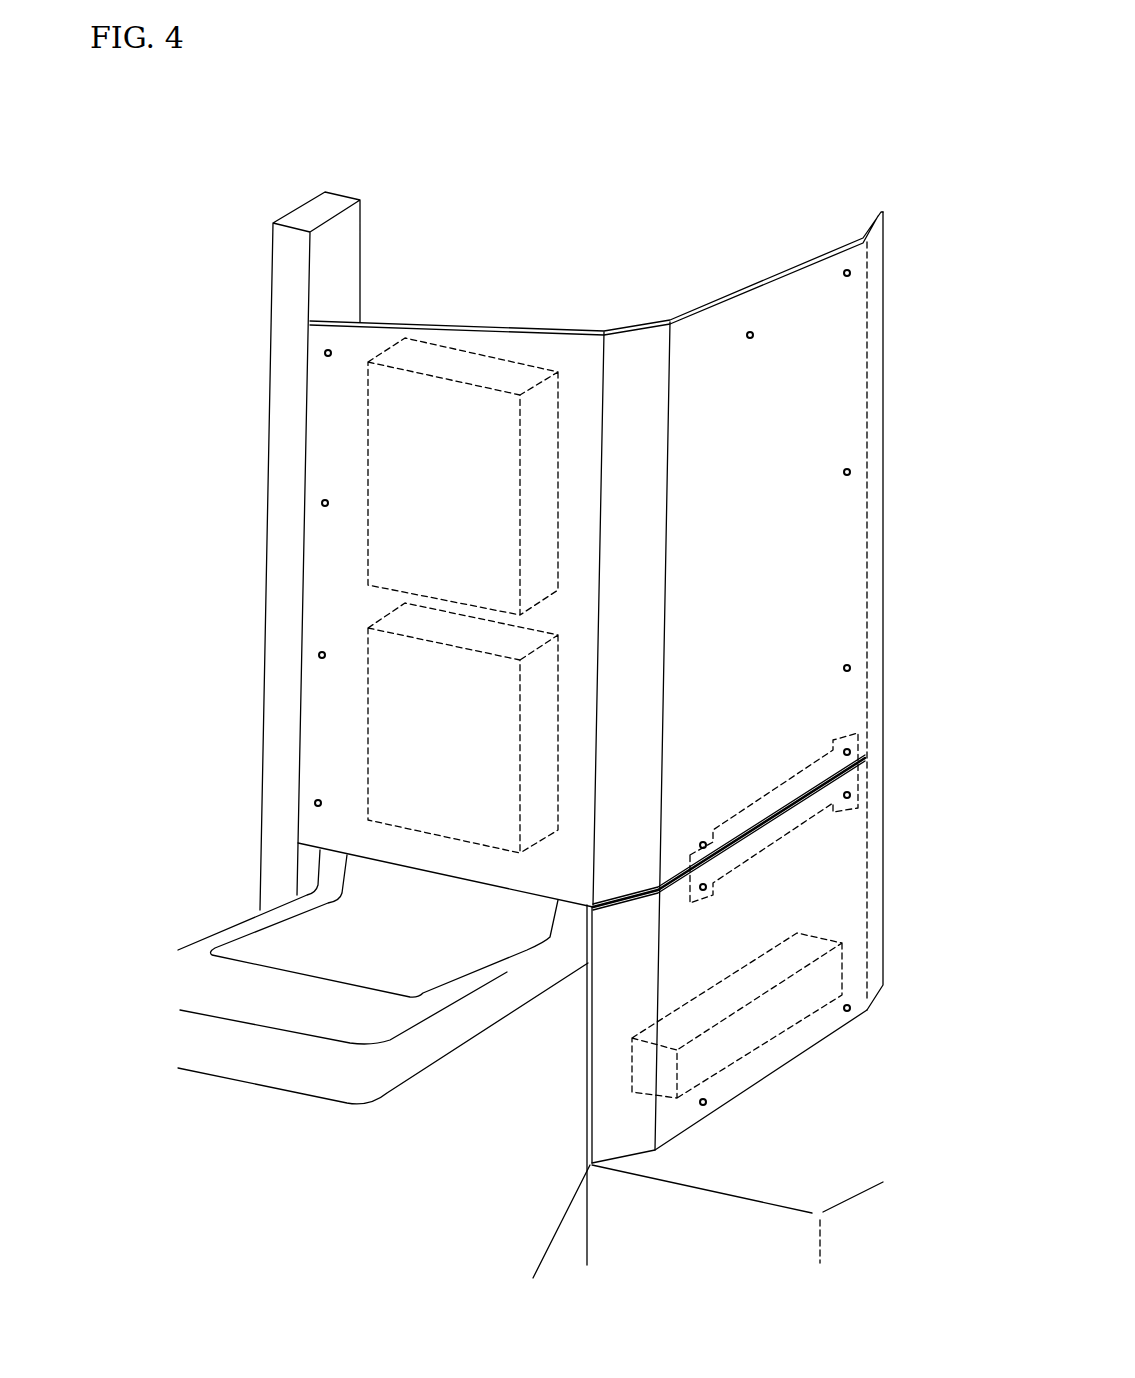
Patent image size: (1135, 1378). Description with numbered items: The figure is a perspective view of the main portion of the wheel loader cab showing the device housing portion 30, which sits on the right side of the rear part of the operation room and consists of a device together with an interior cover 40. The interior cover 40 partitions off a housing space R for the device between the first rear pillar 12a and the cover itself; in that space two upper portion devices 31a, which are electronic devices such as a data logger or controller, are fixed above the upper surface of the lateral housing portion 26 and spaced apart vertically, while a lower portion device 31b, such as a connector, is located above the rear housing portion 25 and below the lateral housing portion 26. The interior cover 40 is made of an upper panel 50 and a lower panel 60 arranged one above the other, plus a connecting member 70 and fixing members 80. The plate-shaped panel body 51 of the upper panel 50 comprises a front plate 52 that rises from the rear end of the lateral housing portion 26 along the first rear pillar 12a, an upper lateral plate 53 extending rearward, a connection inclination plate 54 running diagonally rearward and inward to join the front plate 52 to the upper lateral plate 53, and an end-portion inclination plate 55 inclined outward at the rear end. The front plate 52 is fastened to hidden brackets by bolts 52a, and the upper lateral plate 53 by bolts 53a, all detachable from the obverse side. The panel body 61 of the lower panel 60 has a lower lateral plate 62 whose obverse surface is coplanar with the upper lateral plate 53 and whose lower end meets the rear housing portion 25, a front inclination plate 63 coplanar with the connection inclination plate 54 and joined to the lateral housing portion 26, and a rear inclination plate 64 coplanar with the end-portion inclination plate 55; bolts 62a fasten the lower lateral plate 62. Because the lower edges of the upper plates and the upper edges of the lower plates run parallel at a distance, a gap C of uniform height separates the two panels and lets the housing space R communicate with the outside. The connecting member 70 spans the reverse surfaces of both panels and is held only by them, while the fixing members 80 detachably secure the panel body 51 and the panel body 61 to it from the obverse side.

The first rear pillar 12a is at (290, 272).
The rear housing portion 25 is at (840, 1170).
The lateral housing portion 26 is at (255, 950).
The device housing portion 30 is at (870, 128).
The upper portion device 31a is at (247, 728).
The lower portion device 31b is at (783, 1008).
The interior cover 40 is at (905, 250).
The upper panel 50 is at (748, 267).
The panel body 51 is at (800, 260).
The front plate 52 is at (320, 443).
The bolts 52a is at (322, 357).
The upper lateral plate 53 is at (840, 567).
The bolts 53a is at (852, 274).
The connection inclination plate 54 is at (637, 375).
The end-portion inclination plate 55 is at (873, 368).
The lower panel 60 is at (750, 1120).
The panel body 61 is at (767, 1085).
The lower lateral plate 62 is at (852, 853).
The bolts 62a is at (853, 1013).
The front inclination plate 63 is at (598, 1040).
The rear inclination plate 64 is at (877, 917).
The connecting member 70 is at (793, 780).
The fixing member 80 is at (703, 884).
The gap C is at (863, 760).
The housing space R is at (407, 311).